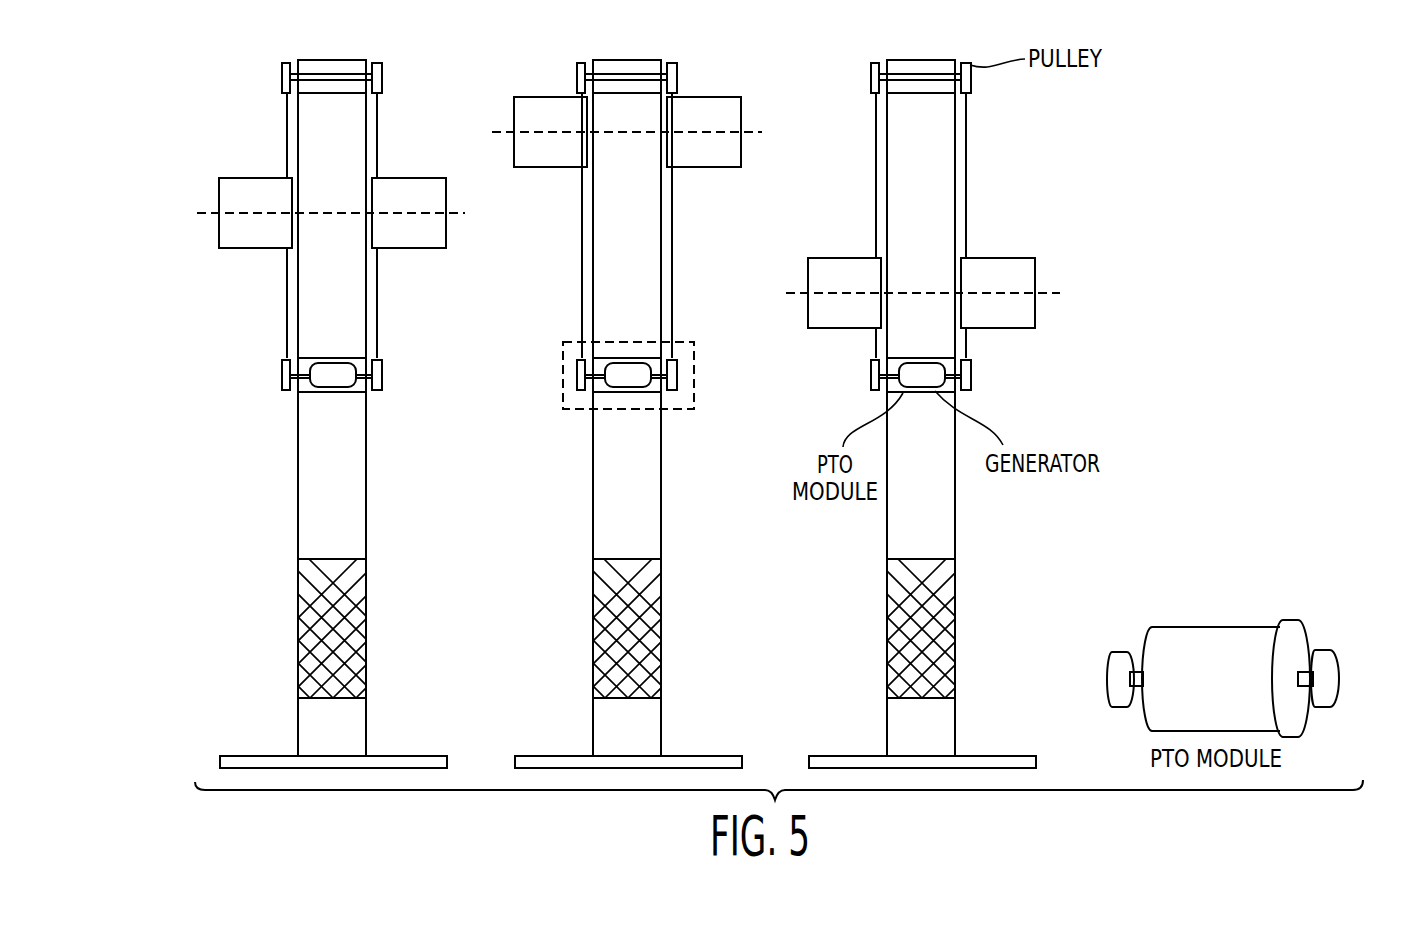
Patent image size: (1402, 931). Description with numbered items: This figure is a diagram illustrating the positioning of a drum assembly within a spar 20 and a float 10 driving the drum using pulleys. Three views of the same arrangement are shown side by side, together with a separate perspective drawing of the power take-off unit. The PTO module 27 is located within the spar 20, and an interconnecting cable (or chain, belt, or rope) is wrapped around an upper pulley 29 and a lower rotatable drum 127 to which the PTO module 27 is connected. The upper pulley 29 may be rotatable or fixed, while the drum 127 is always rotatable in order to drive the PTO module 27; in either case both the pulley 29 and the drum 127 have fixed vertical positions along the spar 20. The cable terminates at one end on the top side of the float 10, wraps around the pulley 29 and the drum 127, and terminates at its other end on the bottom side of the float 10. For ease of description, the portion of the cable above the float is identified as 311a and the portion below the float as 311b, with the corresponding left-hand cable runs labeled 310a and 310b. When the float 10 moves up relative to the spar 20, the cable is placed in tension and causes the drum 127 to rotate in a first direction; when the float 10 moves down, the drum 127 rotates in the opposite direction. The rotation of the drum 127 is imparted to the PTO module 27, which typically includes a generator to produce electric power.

The rotor / turbine body 10 is at (237, 186).
The spar 20 is at (320, 60).
The PTO module 27 is at (688, 409).
The upper pulley 29 is at (384, 76).
The lower rotatable drum 127 is at (385, 376).
The left upper belt segment 310a is at (287, 112).
The left lower belt segment 310b is at (287, 320).
The portion of cable above the float 311a is at (378, 128).
The portion of cable below the float 311b is at (378, 318).